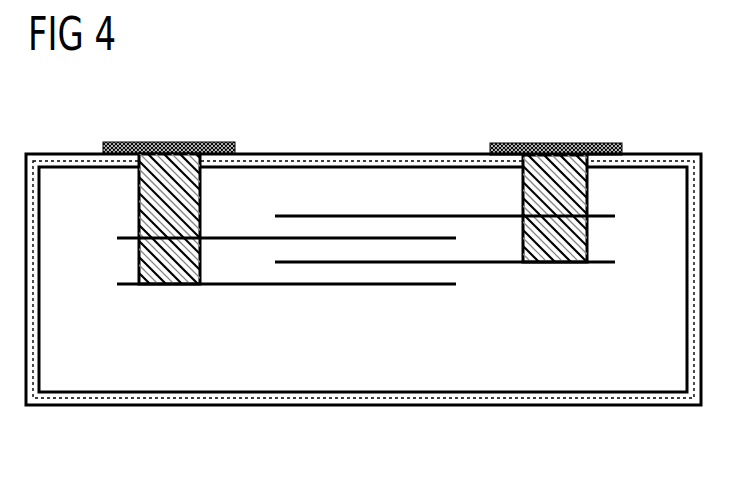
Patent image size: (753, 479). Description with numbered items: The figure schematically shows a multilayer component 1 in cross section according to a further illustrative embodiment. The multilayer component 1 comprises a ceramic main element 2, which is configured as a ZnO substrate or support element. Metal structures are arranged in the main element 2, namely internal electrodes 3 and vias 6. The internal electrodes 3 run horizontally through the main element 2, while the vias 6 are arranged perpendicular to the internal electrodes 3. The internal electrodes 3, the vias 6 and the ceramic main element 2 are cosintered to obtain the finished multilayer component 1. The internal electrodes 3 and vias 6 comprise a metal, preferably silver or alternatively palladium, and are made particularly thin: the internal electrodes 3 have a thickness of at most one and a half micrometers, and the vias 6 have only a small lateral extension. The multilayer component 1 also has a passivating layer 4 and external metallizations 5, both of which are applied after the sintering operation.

The multilayer component 1 is at (363, 258).
The ceramic main element 2 is at (548, 378).
The internal electrodes 3 is at (117, 238).
The passivating layer 4 is at (313, 393).
The external metallizations 5 is at (165, 142).
The vias 6 is at (150, 203).